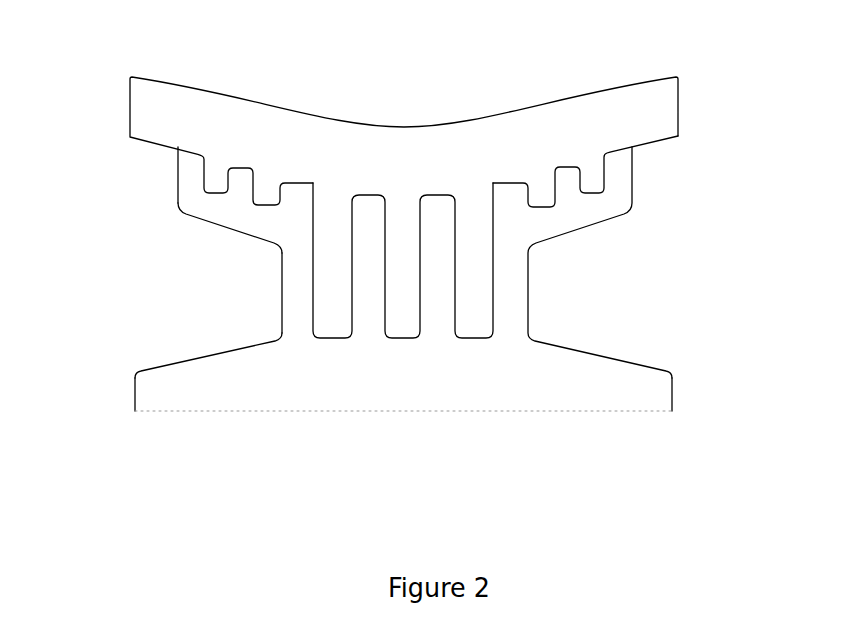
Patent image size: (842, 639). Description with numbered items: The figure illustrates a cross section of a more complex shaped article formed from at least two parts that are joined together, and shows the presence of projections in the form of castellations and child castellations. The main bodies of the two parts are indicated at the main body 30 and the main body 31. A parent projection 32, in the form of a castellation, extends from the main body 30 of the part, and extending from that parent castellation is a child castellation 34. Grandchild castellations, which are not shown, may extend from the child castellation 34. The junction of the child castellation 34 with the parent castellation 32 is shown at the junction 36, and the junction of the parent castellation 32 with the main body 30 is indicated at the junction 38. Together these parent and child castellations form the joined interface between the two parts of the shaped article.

The main body of the part 30 is at (612, 383).
The main body of the part 31 is at (637, 112).
The parent projection 32 is at (298, 287).
The child castellation 34 is at (220, 215).
The junction of the child castellation with the parent castellation 36 is at (278, 246).
The junction of the parent castellation with the main body 38 is at (277, 337).